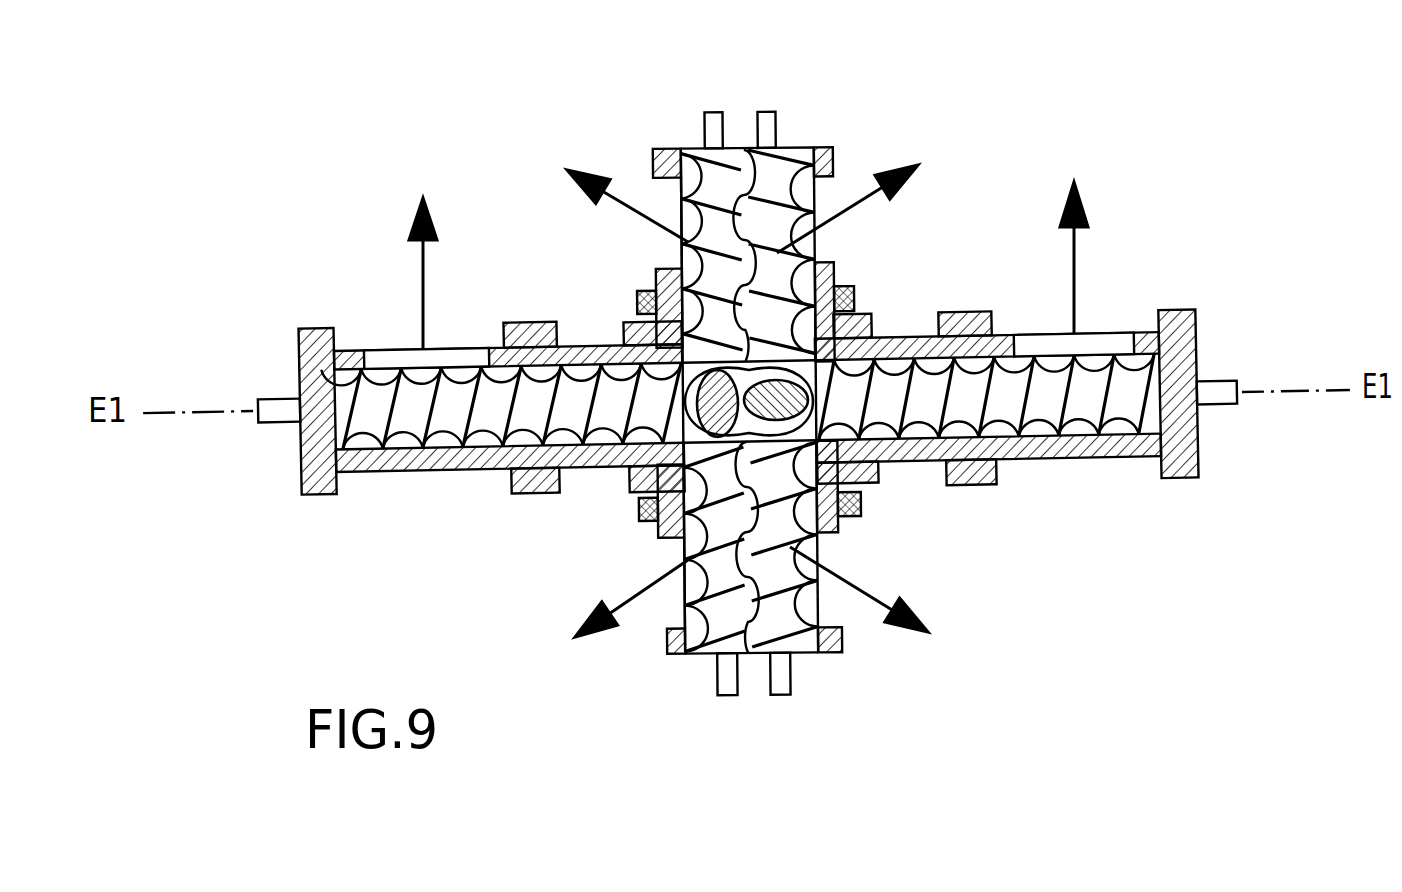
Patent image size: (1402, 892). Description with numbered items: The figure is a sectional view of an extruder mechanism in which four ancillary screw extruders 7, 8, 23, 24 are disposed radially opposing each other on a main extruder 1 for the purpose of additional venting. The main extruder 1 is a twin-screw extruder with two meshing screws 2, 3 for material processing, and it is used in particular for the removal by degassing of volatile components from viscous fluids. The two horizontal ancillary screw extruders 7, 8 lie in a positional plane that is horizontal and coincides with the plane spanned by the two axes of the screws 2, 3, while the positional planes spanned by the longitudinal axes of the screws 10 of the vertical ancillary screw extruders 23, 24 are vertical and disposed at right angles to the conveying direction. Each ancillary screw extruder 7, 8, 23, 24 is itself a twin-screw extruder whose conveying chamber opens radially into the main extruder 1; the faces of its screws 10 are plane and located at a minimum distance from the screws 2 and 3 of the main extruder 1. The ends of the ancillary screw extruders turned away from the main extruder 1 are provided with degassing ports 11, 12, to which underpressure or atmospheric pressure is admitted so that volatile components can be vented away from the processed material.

The main extruder 1 is at (830, 348).
The screw 2 is at (658, 454).
The screw 3 is at (862, 415).
The ancillary screw extruder 7 is at (527, 320).
The ancillary screw extruder 8 is at (972, 313).
The screws 10 is at (712, 188).
The degassing port 11 is at (670, 240).
The degassing port 12 is at (1108, 340).
The ancillary screw extruder 23 is at (840, 152).
The ancillary screw extruder 24 is at (843, 640).